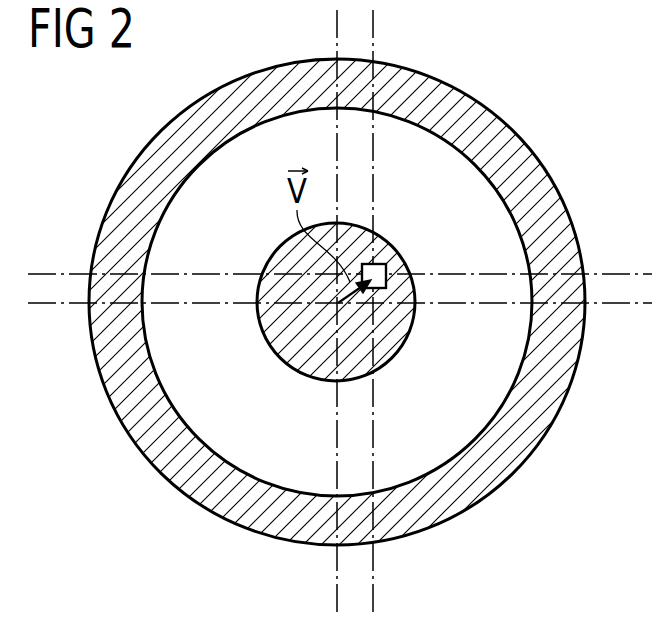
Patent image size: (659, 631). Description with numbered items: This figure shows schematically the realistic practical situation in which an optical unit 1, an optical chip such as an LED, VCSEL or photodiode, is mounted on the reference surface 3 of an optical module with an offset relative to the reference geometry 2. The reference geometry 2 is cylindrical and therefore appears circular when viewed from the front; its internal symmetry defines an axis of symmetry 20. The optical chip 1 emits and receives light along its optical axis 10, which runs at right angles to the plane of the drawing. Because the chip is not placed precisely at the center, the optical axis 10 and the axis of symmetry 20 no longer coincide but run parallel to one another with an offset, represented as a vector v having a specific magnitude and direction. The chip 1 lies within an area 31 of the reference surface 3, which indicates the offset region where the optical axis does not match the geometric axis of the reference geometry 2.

The optical unit 1 is at (383, 265).
The reference geometry 2 is at (568, 325).
The reference surface 3 is at (503, 367).
The optical axis 10 is at (374, 263).
The axis of symmetry 20 is at (338, 300).
The area 31 is at (393, 323).